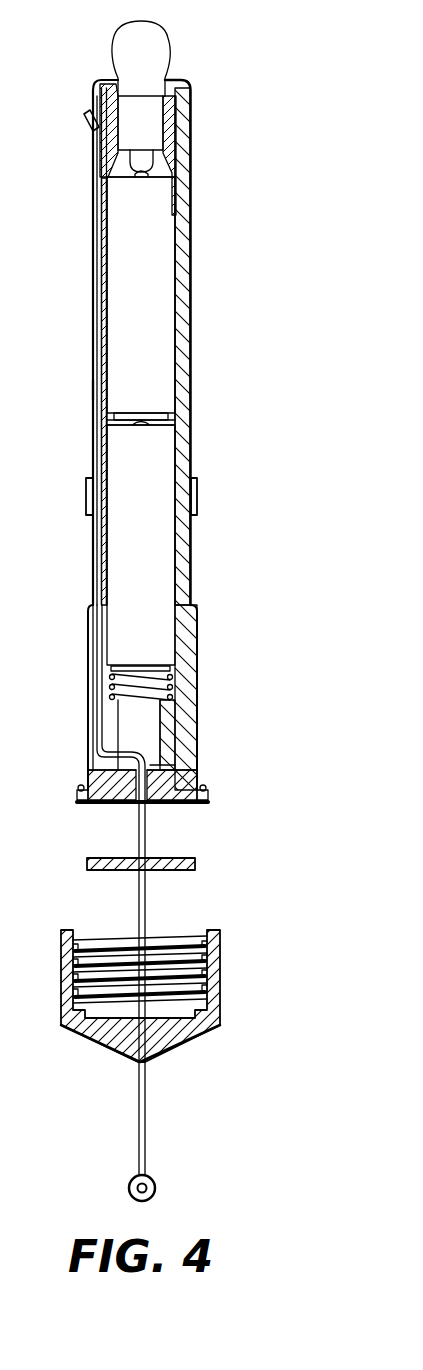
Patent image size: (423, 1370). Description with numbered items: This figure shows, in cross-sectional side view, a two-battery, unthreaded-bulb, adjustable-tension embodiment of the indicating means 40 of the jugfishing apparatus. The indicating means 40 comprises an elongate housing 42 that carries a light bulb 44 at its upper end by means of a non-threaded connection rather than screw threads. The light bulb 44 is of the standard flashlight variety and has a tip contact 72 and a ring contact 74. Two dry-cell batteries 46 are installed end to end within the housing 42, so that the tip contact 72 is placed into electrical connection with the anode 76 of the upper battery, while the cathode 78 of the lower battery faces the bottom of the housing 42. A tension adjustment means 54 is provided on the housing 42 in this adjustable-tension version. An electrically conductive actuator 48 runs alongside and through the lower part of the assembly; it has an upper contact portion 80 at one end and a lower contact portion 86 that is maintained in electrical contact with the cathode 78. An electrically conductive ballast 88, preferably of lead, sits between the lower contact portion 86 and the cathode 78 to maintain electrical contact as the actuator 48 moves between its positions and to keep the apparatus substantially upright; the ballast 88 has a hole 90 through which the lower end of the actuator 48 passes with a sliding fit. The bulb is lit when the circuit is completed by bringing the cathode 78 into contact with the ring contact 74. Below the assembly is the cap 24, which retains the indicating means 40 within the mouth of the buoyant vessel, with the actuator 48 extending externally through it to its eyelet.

The indicating means 40 is at (256, 68).
The housing 42 is at (183, 321).
The light bulb 44 is at (143, 36).
The dry-cell battery 46 is at (133, 260).
The actuator 48 is at (93, 391).
The tension adjustment means 54 is at (205, 494).
The tip contact 72 is at (143, 163).
The ring contact 74 is at (148, 112).
The anode 76 is at (140, 179).
The cathode 78 is at (168, 683).
The upper contact portion 80 is at (92, 131).
The lower contact portion 86 is at (125, 757).
The ballast 88 is at (167, 804).
The hole 90 is at (118, 804).
The cap 24 is at (180, 1050).